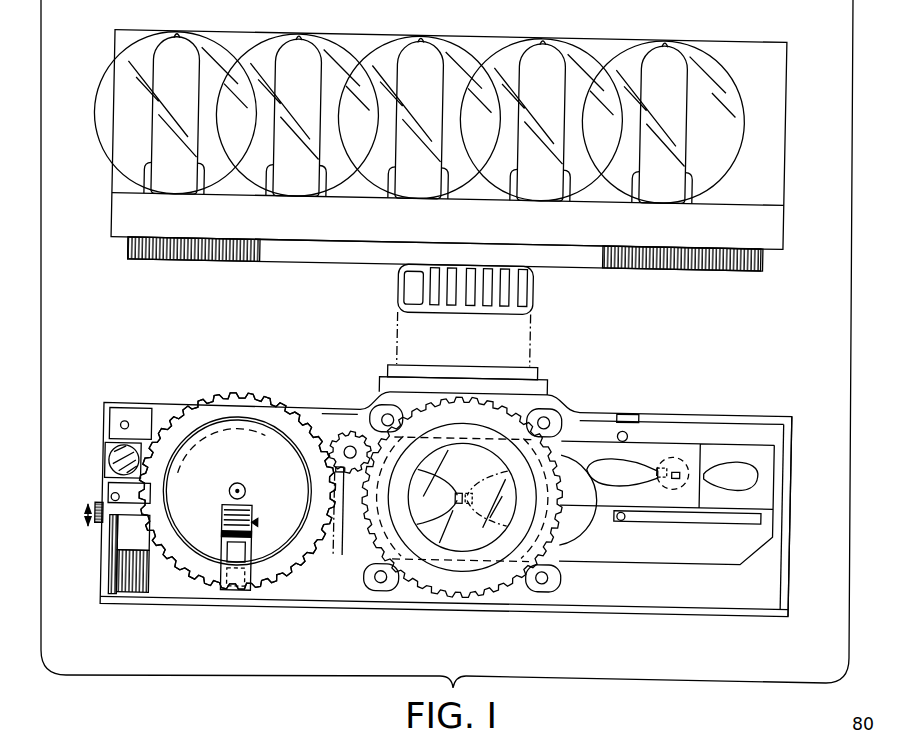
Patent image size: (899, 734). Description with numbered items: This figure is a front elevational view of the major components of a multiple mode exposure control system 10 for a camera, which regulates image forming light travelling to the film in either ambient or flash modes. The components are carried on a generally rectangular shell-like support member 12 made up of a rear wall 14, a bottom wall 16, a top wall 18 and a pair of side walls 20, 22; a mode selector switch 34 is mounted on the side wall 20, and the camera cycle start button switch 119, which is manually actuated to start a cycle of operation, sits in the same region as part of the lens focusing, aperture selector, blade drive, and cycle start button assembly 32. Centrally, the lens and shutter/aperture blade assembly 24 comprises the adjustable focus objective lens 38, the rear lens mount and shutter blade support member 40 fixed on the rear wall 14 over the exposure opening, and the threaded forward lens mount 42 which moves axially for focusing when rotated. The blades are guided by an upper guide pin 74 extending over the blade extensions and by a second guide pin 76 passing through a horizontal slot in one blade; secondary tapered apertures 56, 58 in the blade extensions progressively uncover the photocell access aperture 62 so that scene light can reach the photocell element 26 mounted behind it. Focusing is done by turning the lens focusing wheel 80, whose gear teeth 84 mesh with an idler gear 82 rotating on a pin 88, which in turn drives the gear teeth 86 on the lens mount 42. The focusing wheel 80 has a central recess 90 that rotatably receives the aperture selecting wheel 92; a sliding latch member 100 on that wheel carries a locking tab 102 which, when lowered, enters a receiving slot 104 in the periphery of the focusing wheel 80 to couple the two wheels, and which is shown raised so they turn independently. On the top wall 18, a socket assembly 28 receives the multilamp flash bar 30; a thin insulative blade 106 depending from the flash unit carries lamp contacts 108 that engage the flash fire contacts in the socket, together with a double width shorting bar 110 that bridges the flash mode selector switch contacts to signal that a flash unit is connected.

The multiple mode exposure control system 10 is at (125, 390).
The support member 12 is at (93, 539).
The rear wall 14 is at (637, 590).
The bottom wall 16 is at (712, 608).
The top wall 18 is at (672, 417).
The side wall 20 is at (102, 433).
The side wall 22 is at (791, 469).
The lens and shutter/aperture blade assembly 24 is at (558, 595).
The photocell element 26 is at (668, 481).
The socket assembly 28 is at (554, 377).
The multilamp flash bar 30 is at (792, 136).
The lens focusing, aperture selector, blade drive, and cycle start button assembly 32 is at (171, 579).
The mode selector switch 34 is at (93, 523).
The objective lens 38 is at (460, 548).
The rear lens mount and shutter blade support member 40 is at (525, 588).
The forward lens mount 42 is at (433, 578).
The secondary tapered aperture 56 is at (605, 468).
The secondary tapered aperture 58 is at (740, 477).
The photocell access aperture 62 is at (662, 469).
The upper guide pin 74 is at (624, 428).
The second guide pin 76 is at (625, 519).
The lens focusing wheel 80 is at (222, 407).
The idler gear 82 is at (340, 440).
The gear teeth 84 is at (242, 394).
The gear teeth 86 is at (560, 452).
The pin 88 is at (348, 447).
The central recess 90 is at (267, 418).
The aperture selecting wheel 92 is at (208, 549).
The sliding latch member 100 is at (224, 506).
The locking tab 102 is at (241, 561).
The receiving slot 104 is at (233, 584).
The insulative blade 106 is at (534, 291).
The lamp contacts 108 is at (504, 306).
The shorting bar 110 is at (409, 283).
The camera cycle start button switch 119 is at (129, 446).